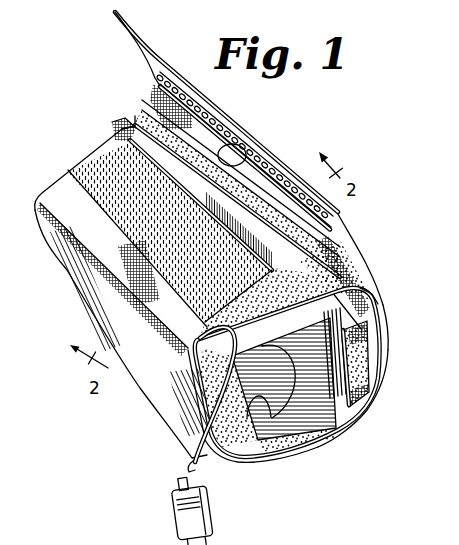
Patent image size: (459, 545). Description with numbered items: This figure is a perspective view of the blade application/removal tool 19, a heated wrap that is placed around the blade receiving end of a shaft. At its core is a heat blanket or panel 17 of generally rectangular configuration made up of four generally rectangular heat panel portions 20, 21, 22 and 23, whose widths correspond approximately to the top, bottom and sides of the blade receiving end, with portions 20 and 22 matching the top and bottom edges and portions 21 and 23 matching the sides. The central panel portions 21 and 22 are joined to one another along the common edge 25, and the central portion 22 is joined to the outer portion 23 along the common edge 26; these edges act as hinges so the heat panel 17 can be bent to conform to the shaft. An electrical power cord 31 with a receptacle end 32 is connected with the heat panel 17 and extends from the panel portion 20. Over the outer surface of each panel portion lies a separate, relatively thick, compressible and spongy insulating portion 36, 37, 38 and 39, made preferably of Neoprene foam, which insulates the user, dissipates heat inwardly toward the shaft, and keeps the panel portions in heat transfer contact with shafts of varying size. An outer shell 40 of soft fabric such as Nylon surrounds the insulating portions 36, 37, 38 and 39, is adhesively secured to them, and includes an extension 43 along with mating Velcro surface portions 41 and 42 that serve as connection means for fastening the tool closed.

The heat blanket or panel 17 is at (304, 328).
The tool 19 is at (282, 152).
The heat panel portion 20 is at (267, 455).
The heat panel portion 21 is at (236, 463).
The heat panel portion 22 is at (306, 445).
The heat panel portion 23 is at (358, 348).
The common edge 25 is at (188, 467).
The common edge 26 is at (372, 410).
The electrical power cord 31 is at (190, 448).
The receptacle end 32 is at (178, 516).
The insulating portion 36 is at (277, 310).
The insulating portion 37 is at (210, 397).
The insulating portion 38 is at (344, 428).
The insulating portion 39 is at (381, 370).
The outer shell 40 is at (100, 296).
The Velcro surface portion 41 is at (115, 125).
The Velcro surface portion 42 is at (222, 143).
The extension 43 is at (380, 294).